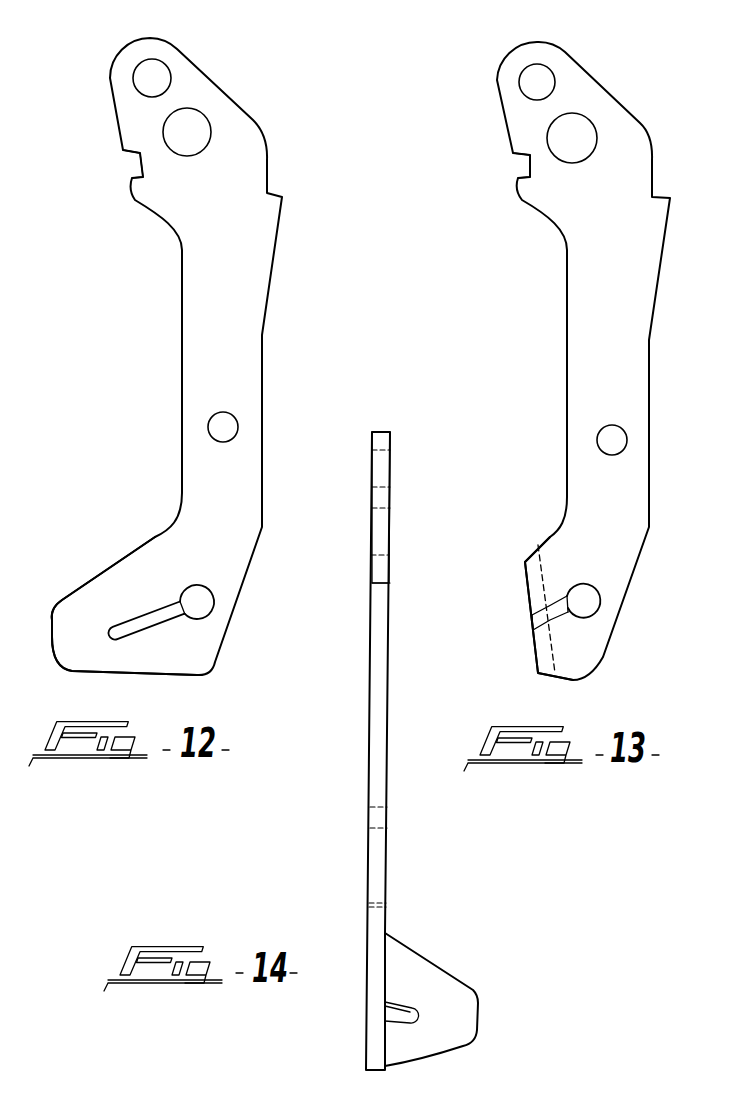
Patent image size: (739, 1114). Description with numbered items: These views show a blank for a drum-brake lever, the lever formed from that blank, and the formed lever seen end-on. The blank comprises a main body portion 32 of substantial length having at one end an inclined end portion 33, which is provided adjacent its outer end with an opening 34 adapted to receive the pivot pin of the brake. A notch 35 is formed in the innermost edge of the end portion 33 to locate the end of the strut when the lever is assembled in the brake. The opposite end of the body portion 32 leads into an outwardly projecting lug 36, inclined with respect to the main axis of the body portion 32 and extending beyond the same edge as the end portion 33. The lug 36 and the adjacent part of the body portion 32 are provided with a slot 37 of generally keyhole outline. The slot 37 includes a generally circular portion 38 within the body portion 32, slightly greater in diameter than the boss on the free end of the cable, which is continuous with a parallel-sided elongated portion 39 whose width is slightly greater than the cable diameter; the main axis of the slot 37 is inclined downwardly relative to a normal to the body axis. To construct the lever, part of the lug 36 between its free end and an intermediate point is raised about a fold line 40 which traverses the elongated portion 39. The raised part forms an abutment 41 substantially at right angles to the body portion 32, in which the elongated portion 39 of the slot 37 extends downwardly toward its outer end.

In FIG. 12, the main body portion 32 is at (257, 278).
In FIG. 13, the main body portion 32 is at (638, 328).
In FIG. 14, the main body portion 32 is at (380, 688).
In FIG. 12, the end portion 33 is at (213, 140).
In FIG. 13, the end portion 33 is at (612, 138).
In FIG. 14, the end portion 33 is at (383, 532).
In FIG. 12, the opening 34 is at (157, 77).
In FIG. 13, the opening 34 is at (525, 87).
In FIG. 12, the notch 35 is at (140, 167).
In FIG. 13, the notch 35 is at (528, 168).
In FIG. 12, the lug 36 is at (128, 575).
In FIG. 13, the lug 36 is at (555, 548).
In FIG. 12, the slot 37 is at (170, 617).
In FIG. 13, the slot 37 is at (560, 615).
In FIG. 14, the slot 37 is at (402, 1022).
In FIG. 12, the circular portion of slot 38 is at (208, 600).
In FIG. 13, the circular portion of slot 38 is at (595, 605).
In FIG. 12, the elongated portion of slot 39 is at (142, 627).
In FIG. 13, the elongated portion of slot 39 is at (555, 623).
In FIG. 14, the elongated portion of slot 39 is at (412, 1012).
In FIG. 13, the fold line 40 is at (555, 673).
In FIG. 13, the abutment 41 is at (547, 622).
In FIG. 14, the abutment 41 is at (422, 975).